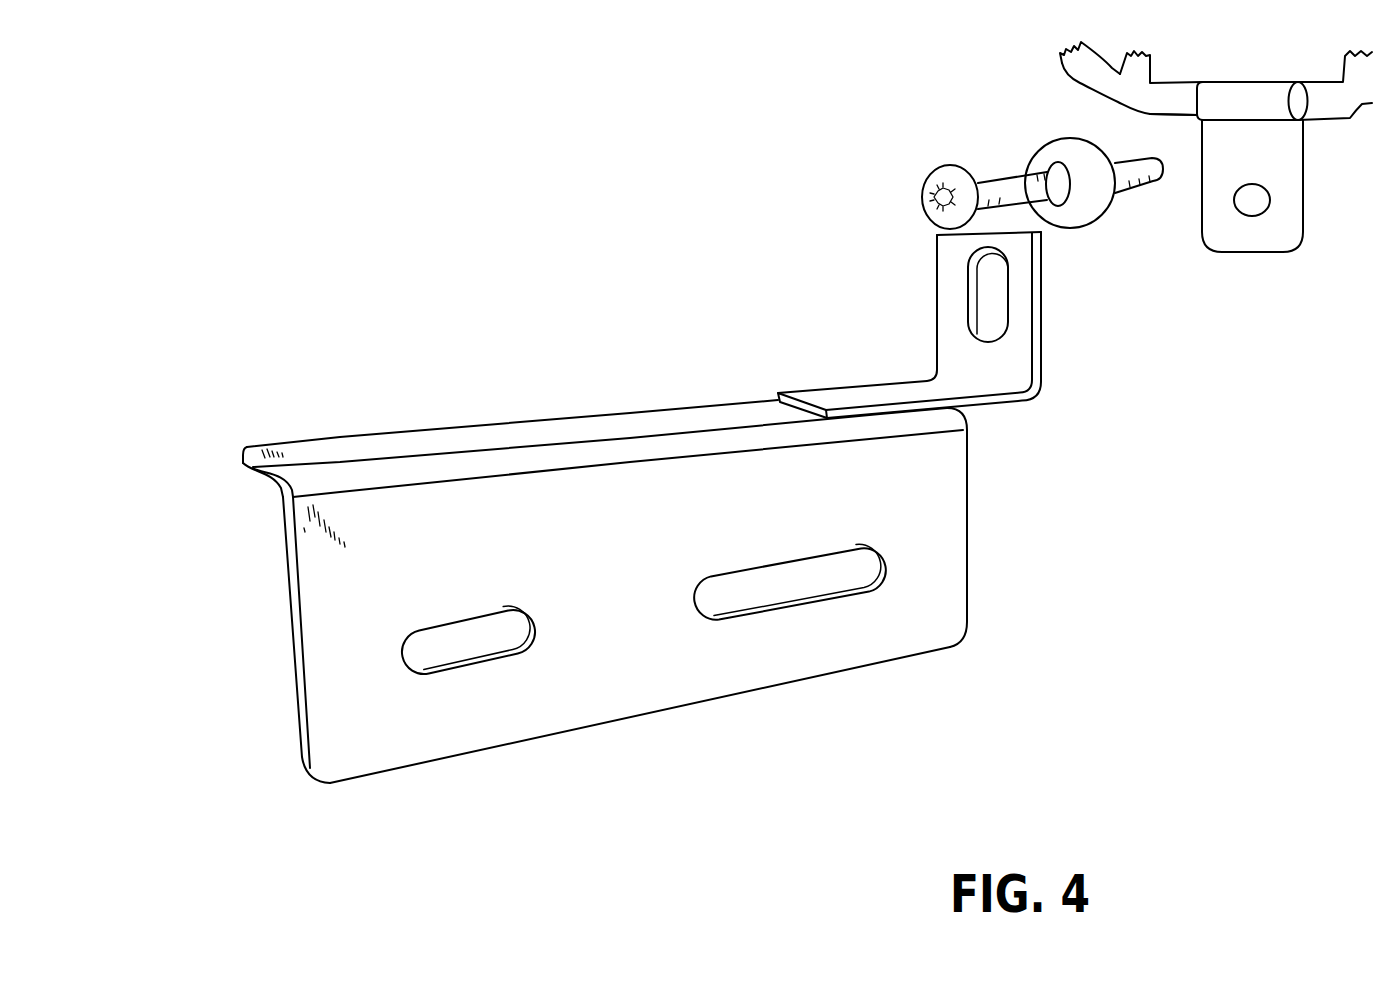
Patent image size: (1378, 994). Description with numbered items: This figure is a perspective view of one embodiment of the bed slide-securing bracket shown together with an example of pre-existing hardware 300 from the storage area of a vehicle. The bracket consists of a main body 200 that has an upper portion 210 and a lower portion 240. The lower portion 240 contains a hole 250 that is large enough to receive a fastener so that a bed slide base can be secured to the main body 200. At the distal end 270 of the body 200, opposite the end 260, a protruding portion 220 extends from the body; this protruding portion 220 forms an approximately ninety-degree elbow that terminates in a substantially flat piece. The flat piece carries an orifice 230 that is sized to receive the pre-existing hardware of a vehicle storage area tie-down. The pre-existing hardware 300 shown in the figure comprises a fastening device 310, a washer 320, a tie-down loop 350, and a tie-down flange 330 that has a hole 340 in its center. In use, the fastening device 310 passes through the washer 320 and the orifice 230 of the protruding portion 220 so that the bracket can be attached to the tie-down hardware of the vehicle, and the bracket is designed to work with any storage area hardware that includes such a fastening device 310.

The main body 200 is at (610, 300).
The upper portion 210 is at (486, 440).
The protruding portion 220 is at (880, 272).
The orifice 230 is at (992, 315).
The lower portion 240 is at (635, 645).
The hole 250 is at (468, 645).
The first end 260 is at (180, 571).
The distal end 270 is at (1026, 520).
The cable assembly 300 is at (1015, 60).
The fastening device 310 is at (932, 183).
The washer 320 is at (1072, 208).
The tie-down flange 330 is at (1252, 240).
The hole 340 is at (1260, 203).
The tie-down loop 350 is at (1181, 118).